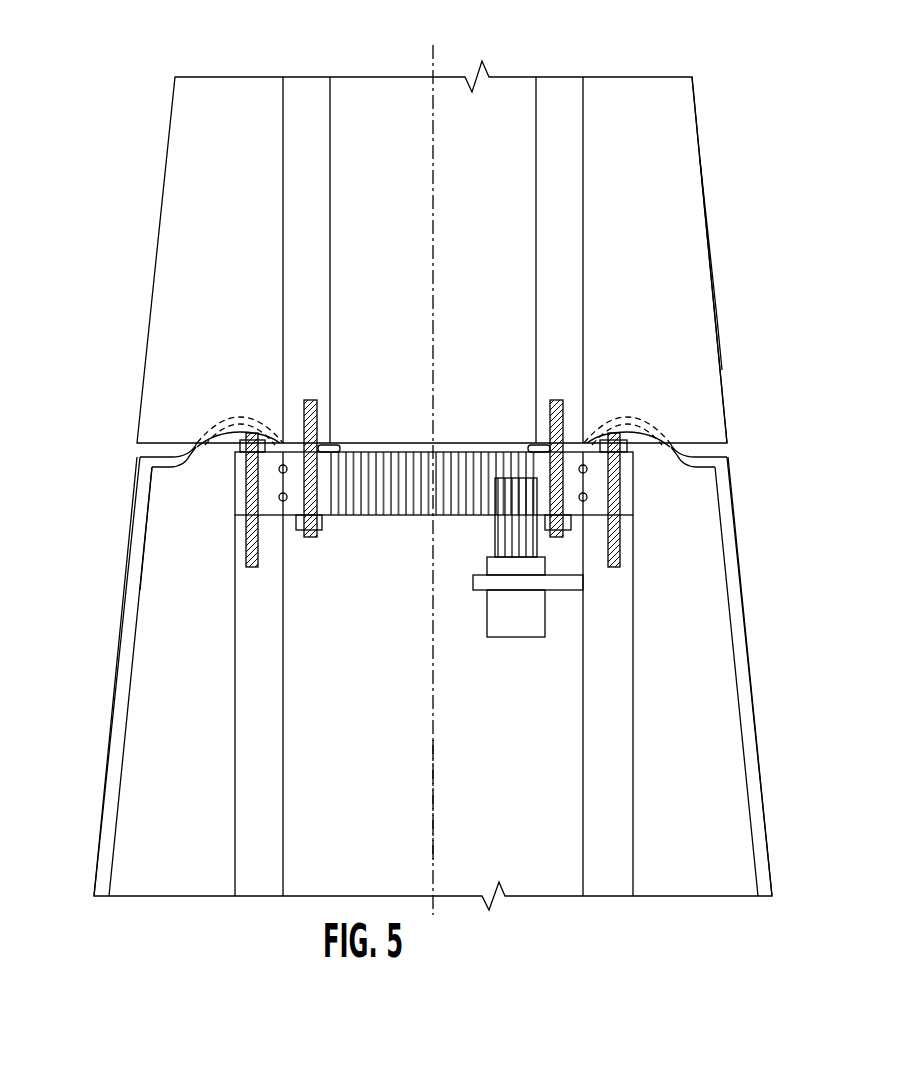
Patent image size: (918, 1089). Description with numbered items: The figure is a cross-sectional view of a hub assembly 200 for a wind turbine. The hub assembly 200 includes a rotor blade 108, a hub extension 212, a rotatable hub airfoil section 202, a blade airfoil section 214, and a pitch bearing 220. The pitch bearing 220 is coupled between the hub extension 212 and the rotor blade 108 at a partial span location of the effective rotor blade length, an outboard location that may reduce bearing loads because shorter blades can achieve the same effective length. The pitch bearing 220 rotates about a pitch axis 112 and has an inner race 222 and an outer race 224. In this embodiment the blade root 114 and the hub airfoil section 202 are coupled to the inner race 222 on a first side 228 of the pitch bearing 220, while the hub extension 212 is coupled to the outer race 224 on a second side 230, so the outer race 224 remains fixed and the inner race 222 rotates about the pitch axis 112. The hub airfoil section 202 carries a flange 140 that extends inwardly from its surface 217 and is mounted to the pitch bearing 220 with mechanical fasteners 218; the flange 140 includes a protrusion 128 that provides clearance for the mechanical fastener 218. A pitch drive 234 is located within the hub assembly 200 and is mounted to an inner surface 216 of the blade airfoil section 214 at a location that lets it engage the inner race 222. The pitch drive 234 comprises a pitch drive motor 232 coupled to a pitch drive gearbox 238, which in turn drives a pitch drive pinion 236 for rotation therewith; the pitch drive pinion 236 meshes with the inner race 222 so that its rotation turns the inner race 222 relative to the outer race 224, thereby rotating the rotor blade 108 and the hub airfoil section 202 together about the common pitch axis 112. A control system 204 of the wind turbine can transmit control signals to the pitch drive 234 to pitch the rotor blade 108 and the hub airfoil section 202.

The hub assembly 200 is at (122, 117).
The rotor blade 108 is at (713, 258).
The pitch axis 112 is at (433, 805).
The blade root 114 is at (583, 280).
The protrusion 128 is at (213, 423).
The flange 140 is at (168, 467).
The hub airfoil section 202 is at (120, 633).
The control system 204 is at (300, 442).
The hub extension 212 is at (235, 742).
The blade airfoil section 214 is at (717, 318).
The inner surface 216 is at (717, 343).
The surface 217 is at (748, 828).
The mechanical fastener 218 is at (612, 573).
The pitch bearing 220 is at (634, 495).
The inner race 222 is at (570, 525).
The outer race 224 is at (625, 517).
The first side 228 is at (325, 445).
The second side 230 is at (322, 524).
The pitch drive motor 232 is at (487, 622).
The pitch drive 234 is at (460, 615).
The pitch drive pinion 236 is at (493, 520).
The pitch drive gearbox 238 is at (477, 572).